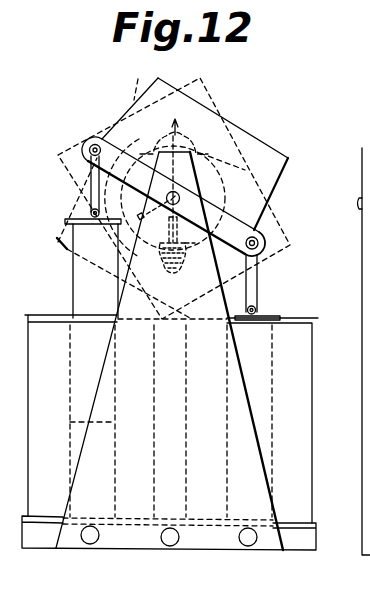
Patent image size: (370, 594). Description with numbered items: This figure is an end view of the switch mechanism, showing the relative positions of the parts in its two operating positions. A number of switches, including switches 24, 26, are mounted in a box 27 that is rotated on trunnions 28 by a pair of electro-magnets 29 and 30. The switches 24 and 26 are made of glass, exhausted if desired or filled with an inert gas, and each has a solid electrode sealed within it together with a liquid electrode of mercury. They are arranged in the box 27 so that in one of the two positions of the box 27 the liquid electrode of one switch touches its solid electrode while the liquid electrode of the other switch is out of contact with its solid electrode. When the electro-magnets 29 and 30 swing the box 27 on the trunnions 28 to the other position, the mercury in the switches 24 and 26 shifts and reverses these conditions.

The switch 24 is at (208, 105).
The switch 26 is at (271, 179).
The box 27 is at (252, 138).
The trunnions 28 is at (358, 203).
The electro-magnet 29 is at (268, 388).
The electro-magnet 30 is at (65, 325).